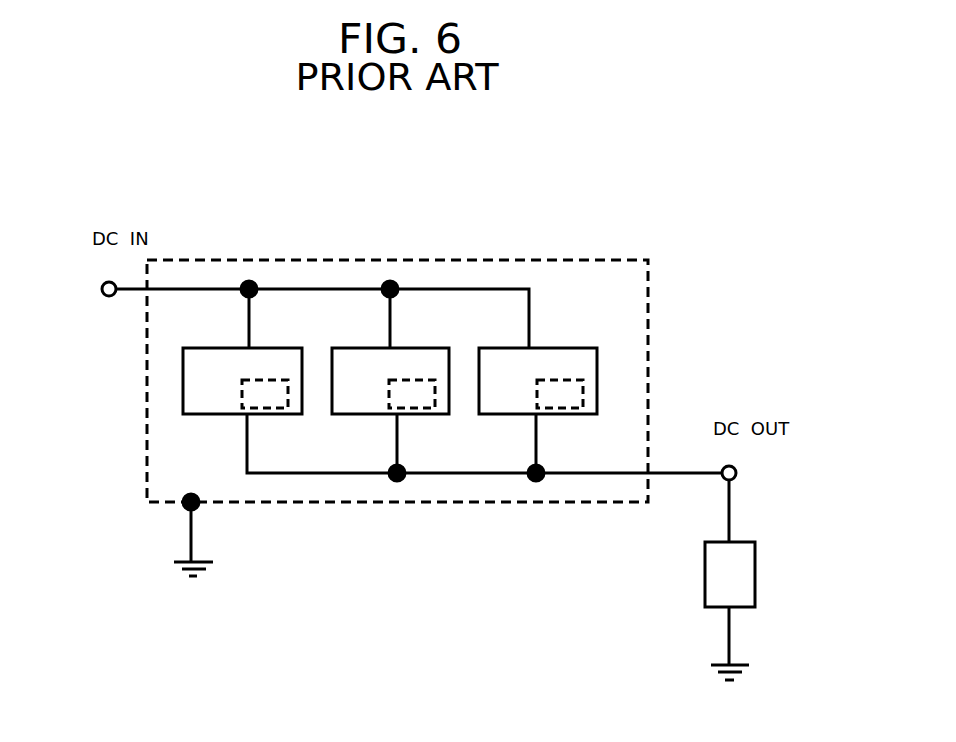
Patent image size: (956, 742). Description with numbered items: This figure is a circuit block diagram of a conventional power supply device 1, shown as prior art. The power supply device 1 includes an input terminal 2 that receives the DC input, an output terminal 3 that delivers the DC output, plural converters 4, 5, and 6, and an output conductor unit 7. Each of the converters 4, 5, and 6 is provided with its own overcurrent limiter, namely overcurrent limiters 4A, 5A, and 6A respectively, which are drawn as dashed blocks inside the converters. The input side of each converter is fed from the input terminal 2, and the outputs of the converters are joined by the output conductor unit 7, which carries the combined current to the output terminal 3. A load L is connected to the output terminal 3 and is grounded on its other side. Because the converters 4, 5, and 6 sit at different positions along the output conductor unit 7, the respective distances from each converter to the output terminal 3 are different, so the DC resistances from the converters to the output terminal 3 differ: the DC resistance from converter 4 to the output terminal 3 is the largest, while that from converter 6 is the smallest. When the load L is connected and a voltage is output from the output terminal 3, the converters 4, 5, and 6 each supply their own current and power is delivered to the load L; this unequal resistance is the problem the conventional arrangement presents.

The power supply device 1 is at (702, 292).
The input terminal 2 is at (103, 300).
The output terminal 3 is at (742, 480).
The converter 4 is at (266, 355).
The converter 5 is at (411, 355).
The converter 6 is at (559, 355).
The overcurrent limiter 4A is at (277, 396).
The overcurrent limiter 5A is at (425, 396).
The overcurrent limiter 6A is at (570, 410).
The output conductor unit 7 is at (333, 480).
The load L is at (740, 593).